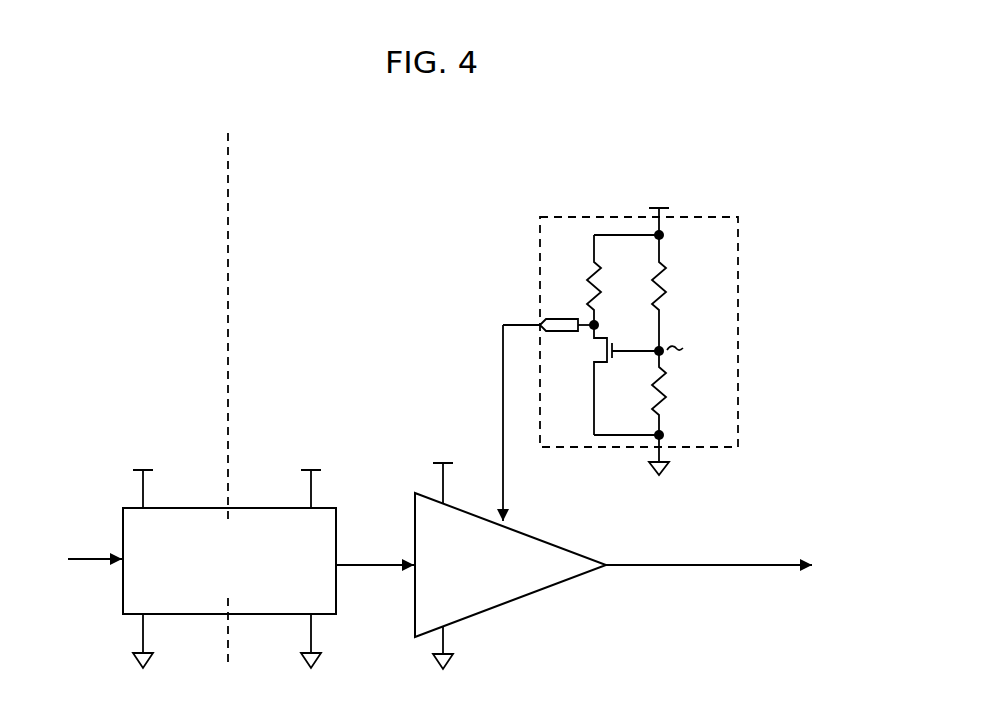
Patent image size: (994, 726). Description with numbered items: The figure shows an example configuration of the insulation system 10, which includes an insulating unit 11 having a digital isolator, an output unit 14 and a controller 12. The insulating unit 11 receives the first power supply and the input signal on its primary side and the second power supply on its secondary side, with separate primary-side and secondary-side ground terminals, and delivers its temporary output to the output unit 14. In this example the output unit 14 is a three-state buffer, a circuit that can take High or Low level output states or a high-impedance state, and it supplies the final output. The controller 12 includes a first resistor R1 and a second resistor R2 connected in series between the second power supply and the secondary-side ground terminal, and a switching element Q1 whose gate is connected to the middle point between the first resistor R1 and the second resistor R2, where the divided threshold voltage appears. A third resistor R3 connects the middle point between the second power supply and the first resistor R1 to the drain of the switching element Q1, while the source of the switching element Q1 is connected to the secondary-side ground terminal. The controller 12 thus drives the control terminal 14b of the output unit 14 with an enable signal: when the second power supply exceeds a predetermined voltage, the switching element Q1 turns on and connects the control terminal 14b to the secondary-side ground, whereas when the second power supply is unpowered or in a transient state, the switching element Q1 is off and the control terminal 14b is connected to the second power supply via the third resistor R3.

The insulation system 10 is at (134, 143).
The insulating unit 11 is at (195, 507).
The controller 12 is at (740, 246).
The output unit 14 is at (536, 596).
The control terminal 14b is at (512, 521).
The first resistor R1 is at (667, 291).
The second resistor R2 is at (669, 401).
The third resistor R3 is at (602, 291).
The switching element Q1 is at (596, 352).